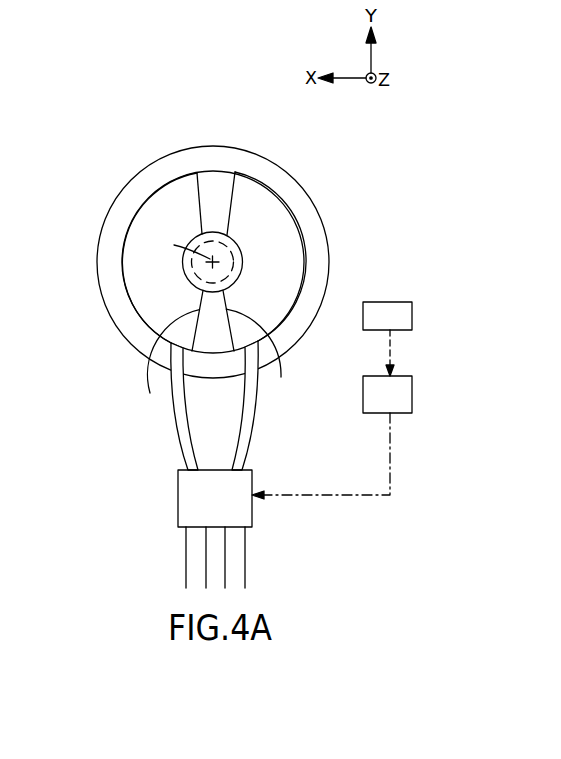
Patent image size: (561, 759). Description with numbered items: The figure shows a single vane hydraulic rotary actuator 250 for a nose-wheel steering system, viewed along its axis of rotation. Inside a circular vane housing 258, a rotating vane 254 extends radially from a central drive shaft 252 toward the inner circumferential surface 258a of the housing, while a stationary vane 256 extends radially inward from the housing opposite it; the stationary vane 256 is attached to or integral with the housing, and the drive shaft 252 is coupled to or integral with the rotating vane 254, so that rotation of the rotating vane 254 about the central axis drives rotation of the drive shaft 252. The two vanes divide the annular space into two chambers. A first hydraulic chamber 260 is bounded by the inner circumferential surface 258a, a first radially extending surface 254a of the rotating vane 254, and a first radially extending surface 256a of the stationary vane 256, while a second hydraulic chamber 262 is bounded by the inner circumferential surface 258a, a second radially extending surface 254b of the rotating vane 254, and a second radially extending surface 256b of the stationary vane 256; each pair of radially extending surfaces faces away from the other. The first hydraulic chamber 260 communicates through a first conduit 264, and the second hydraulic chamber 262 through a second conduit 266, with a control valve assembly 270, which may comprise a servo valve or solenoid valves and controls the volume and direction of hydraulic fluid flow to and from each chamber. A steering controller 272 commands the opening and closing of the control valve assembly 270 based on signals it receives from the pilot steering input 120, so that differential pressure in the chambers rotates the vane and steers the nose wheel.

The actuator 250 is at (187, 102).
The drive shaft 252 is at (229, 247).
The rotating vane 254 is at (212, 195).
The first radially extending surface of rotating vane 254a is at (230, 205).
The second radially extending surface of rotating vane 254b is at (200, 204).
The stationary vane 256 is at (213, 322).
The first radially extending surface of stationary vane 256a is at (266, 353).
The second radially extending surface of stationary vane 256b is at (165, 365).
The vane housing 258 is at (125, 310).
The inner circumferential surface 258a is at (123, 261).
The first hydraulic chamber 260 is at (280, 294).
The second hydraulic chamber 262 is at (163, 278).
The first conduit 264 is at (247, 428).
The second conduit 266 is at (183, 435).
The control valve assembly 270 is at (228, 510).
The steering controller 272 is at (400, 404).
The pilot steering input 120 is at (400, 325).